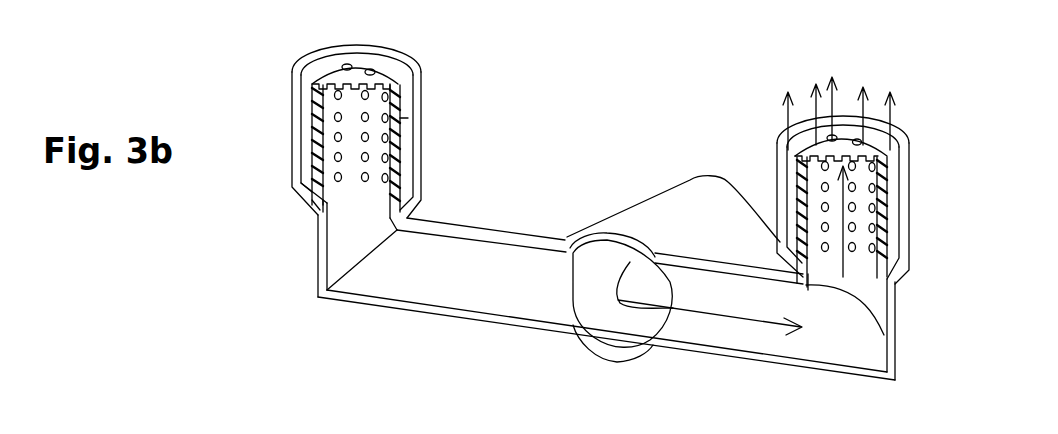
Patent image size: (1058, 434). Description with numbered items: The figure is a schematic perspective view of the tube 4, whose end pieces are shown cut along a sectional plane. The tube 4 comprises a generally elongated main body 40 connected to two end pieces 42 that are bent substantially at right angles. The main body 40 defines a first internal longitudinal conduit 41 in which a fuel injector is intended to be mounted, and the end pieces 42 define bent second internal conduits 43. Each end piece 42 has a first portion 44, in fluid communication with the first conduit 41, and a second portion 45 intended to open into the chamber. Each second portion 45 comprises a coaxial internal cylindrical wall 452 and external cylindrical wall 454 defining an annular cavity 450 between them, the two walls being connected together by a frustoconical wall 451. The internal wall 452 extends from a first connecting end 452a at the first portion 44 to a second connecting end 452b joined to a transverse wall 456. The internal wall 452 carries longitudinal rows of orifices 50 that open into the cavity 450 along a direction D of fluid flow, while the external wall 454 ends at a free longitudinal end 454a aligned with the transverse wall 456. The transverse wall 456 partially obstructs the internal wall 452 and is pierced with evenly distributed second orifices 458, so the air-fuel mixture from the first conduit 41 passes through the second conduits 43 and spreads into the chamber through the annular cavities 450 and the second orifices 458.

The tube 4 is at (660, 74).
The main body 40 is at (652, 184).
The first internal longitudinal conduit 41 is at (613, 316).
The end piece 42 is at (458, 65).
The second internal conduit 43 is at (606, 314).
The first portion 44 is at (488, 325).
The second portion 45 is at (318, 266).
The orifices 50 is at (408, 143).
The annular cavity 450 is at (410, 182).
The frustoconical wall 451 is at (297, 196).
The internal cylindrical wall 452 is at (583, 186).
The first connecting end 452a is at (320, 218).
The second longitudinal connecting end 452b is at (315, 80).
The external cylindrical wall 454 is at (564, 147).
The free longitudinal end 454a is at (297, 64).
The transverse wall 456 is at (599, 80).
The second orifices 458 is at (370, 70).
The direction of fluid flow D is at (878, 222).